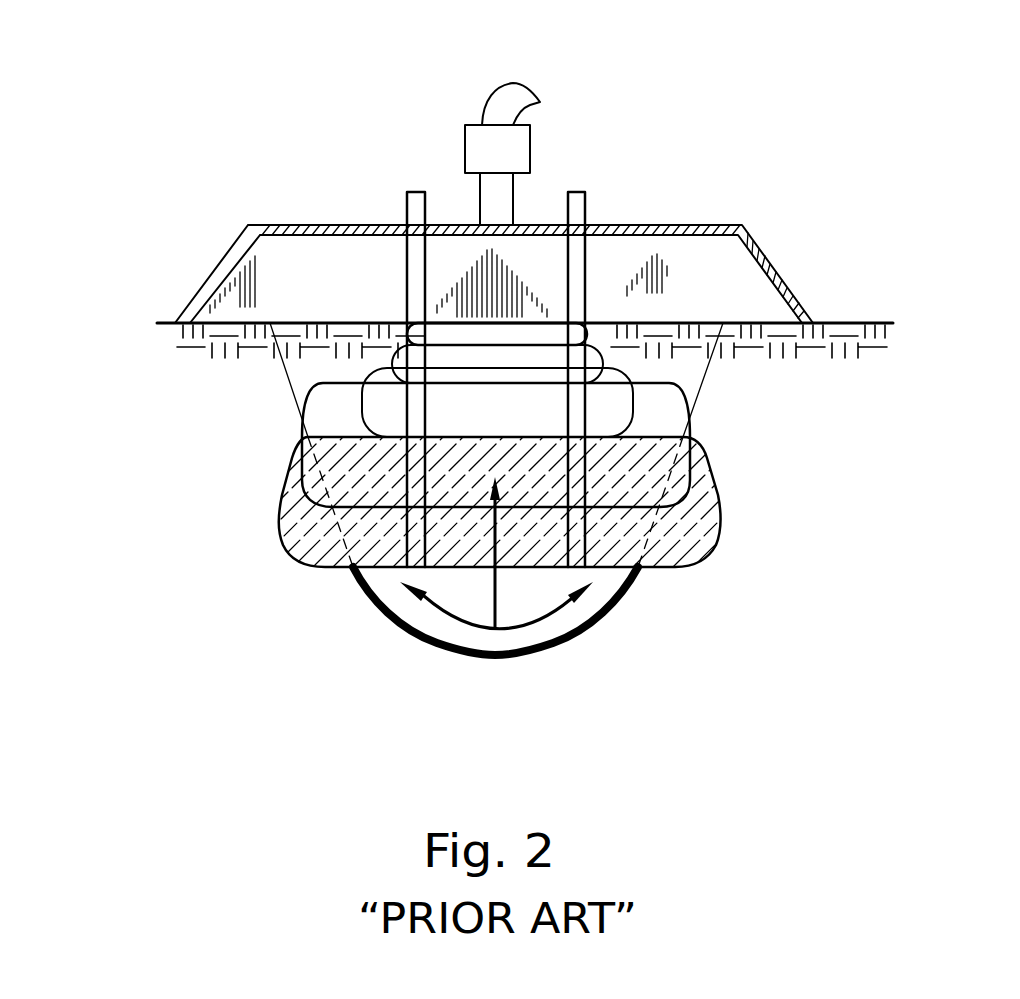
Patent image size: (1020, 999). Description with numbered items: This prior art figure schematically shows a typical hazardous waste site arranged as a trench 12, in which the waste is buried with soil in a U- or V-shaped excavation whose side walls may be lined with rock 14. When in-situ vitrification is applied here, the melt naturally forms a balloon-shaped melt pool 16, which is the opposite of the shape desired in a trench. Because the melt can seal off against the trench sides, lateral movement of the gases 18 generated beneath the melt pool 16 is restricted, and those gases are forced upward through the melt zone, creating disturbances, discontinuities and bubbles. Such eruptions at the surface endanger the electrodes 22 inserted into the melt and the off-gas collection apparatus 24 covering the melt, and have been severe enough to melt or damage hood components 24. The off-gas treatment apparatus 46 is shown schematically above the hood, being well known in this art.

The trench 12 is at (223, 432).
The rock 14 is at (702, 385).
The melt pool 16 is at (508, 424).
The gases 18 is at (540, 620).
The electrodes 22 is at (407, 267).
The off-gas collection apparatus 24 is at (770, 262).
The off-gas treatment apparatus 46 is at (463, 143).